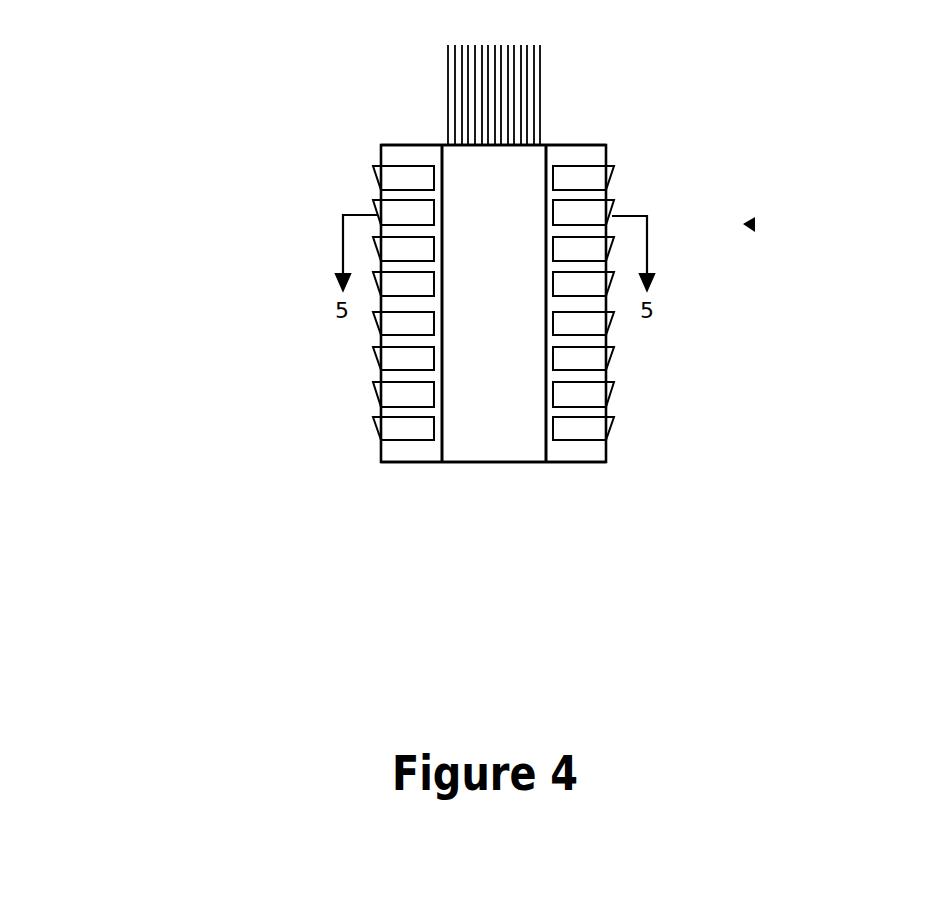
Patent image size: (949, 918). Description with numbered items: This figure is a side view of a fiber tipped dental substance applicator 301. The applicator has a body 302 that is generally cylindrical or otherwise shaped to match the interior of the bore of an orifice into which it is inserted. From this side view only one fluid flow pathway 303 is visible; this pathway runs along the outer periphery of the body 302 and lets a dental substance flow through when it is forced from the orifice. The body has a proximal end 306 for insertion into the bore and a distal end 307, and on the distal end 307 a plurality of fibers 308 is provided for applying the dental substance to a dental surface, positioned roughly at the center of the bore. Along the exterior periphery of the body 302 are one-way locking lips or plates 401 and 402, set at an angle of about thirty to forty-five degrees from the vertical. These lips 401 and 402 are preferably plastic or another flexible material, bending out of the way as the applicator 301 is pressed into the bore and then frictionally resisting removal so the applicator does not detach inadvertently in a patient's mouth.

The fiber tipped dental substance applicator 301 is at (844, 222).
The body 302 is at (510, 453).
The fluid flow pathway 303 is at (523, 399).
The proximal end 306 is at (407, 463).
The distal end 307 is at (575, 144).
The fibers 308 is at (448, 88).
The one-way locking lip 401 is at (377, 393).
The one-way locking lip 402 is at (626, 363).